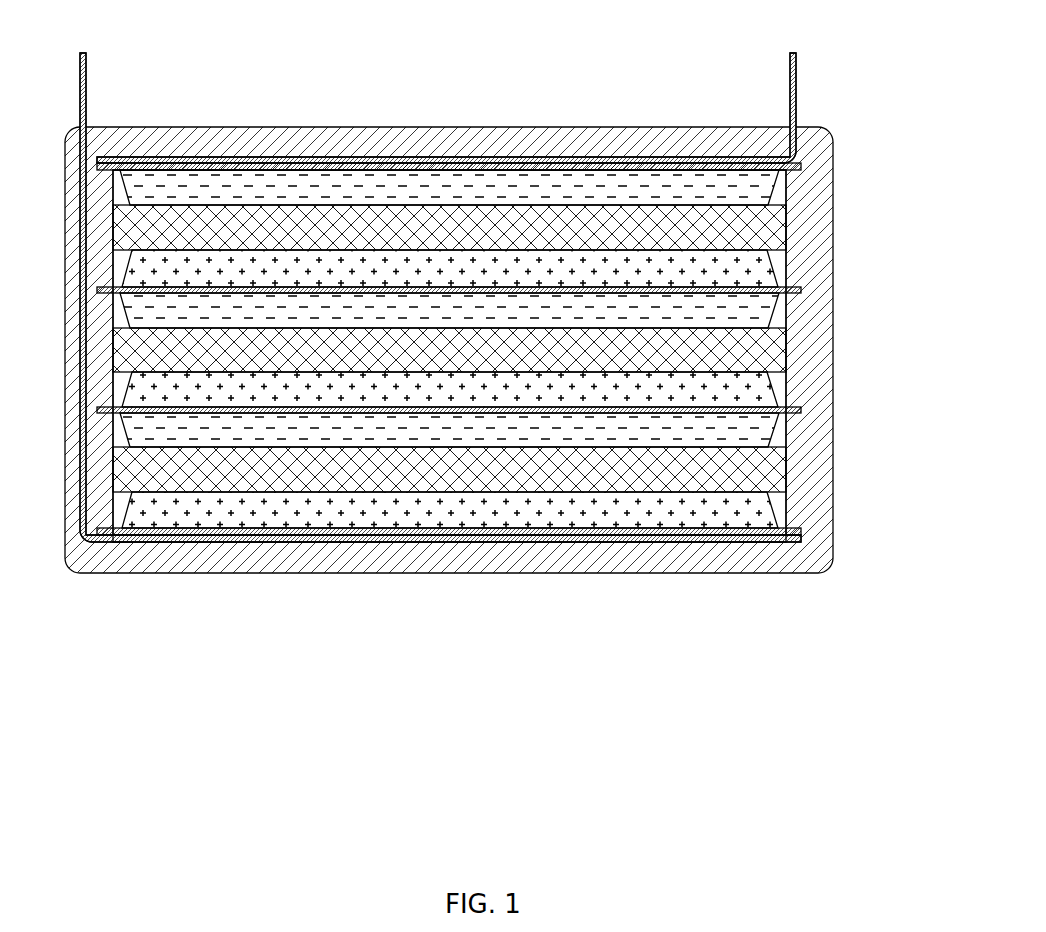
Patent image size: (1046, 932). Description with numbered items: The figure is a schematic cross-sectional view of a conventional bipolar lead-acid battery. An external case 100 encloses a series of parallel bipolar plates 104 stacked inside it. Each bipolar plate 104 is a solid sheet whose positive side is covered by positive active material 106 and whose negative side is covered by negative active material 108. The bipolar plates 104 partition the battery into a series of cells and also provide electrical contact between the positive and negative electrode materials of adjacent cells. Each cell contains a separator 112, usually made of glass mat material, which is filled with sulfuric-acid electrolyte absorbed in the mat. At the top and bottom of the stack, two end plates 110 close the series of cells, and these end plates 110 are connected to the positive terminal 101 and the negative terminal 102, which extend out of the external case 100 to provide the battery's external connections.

The external case 100 is at (592, 558).
The positive terminal 101 is at (87, 95).
The negative terminal 102 is at (789, 100).
The bipolar plate 104 is at (801, 290).
The positive active material 106 is at (767, 272).
The negative active material 108 is at (560, 188).
The end plate 110 is at (355, 160).
The separator 112 is at (783, 222).